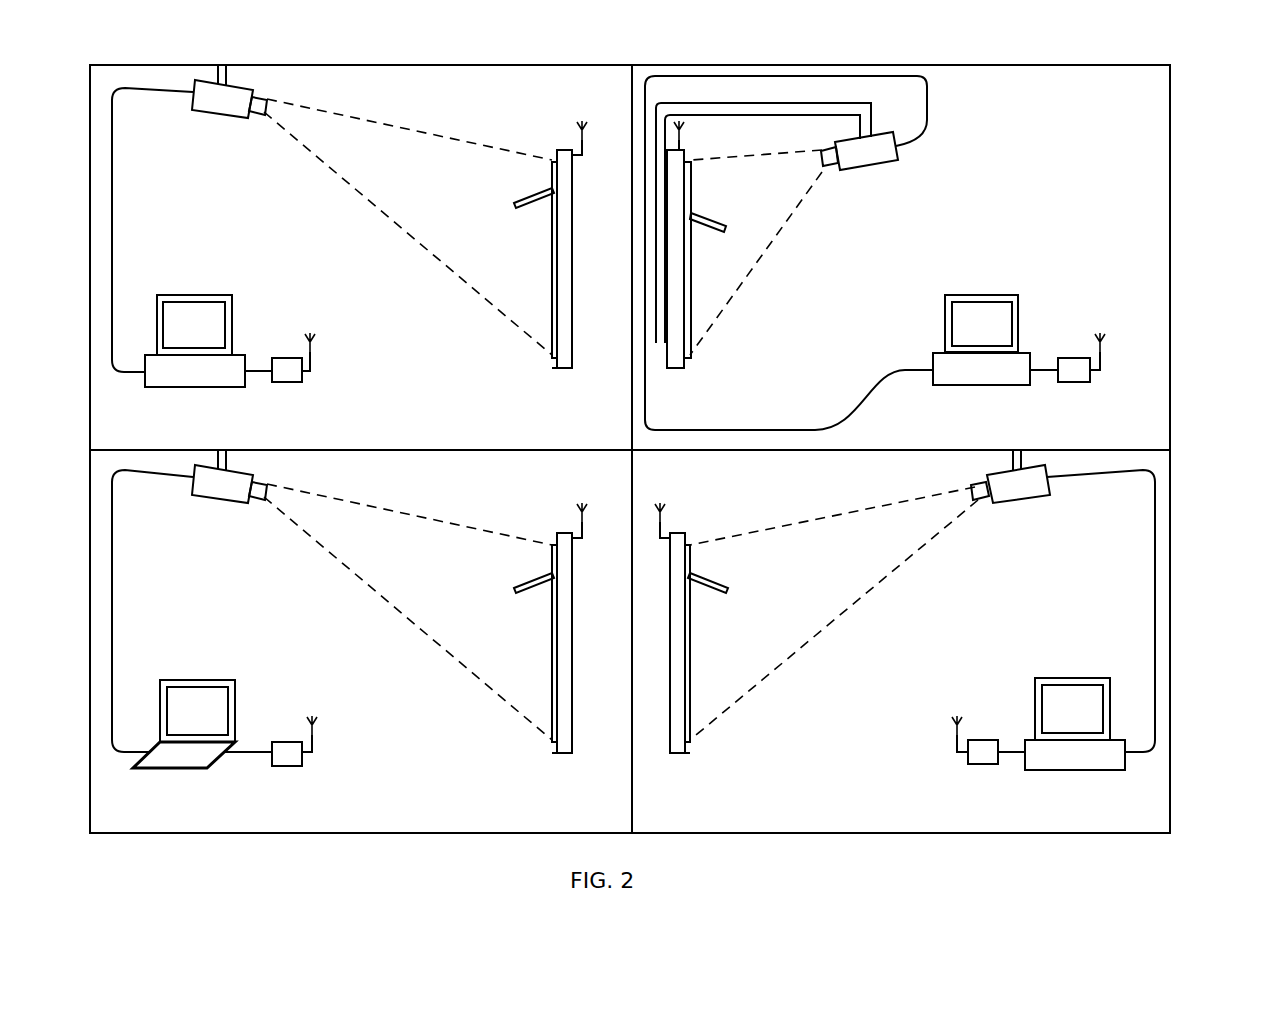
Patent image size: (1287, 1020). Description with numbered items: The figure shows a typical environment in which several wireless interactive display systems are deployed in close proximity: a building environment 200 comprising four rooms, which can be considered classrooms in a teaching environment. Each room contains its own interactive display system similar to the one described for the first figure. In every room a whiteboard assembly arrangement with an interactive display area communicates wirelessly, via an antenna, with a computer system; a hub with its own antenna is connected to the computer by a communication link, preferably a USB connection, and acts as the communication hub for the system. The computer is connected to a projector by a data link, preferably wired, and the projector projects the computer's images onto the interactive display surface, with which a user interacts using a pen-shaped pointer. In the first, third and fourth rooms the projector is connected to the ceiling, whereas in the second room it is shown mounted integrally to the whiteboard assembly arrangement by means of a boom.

The building environment 200 is at (1195, 102).